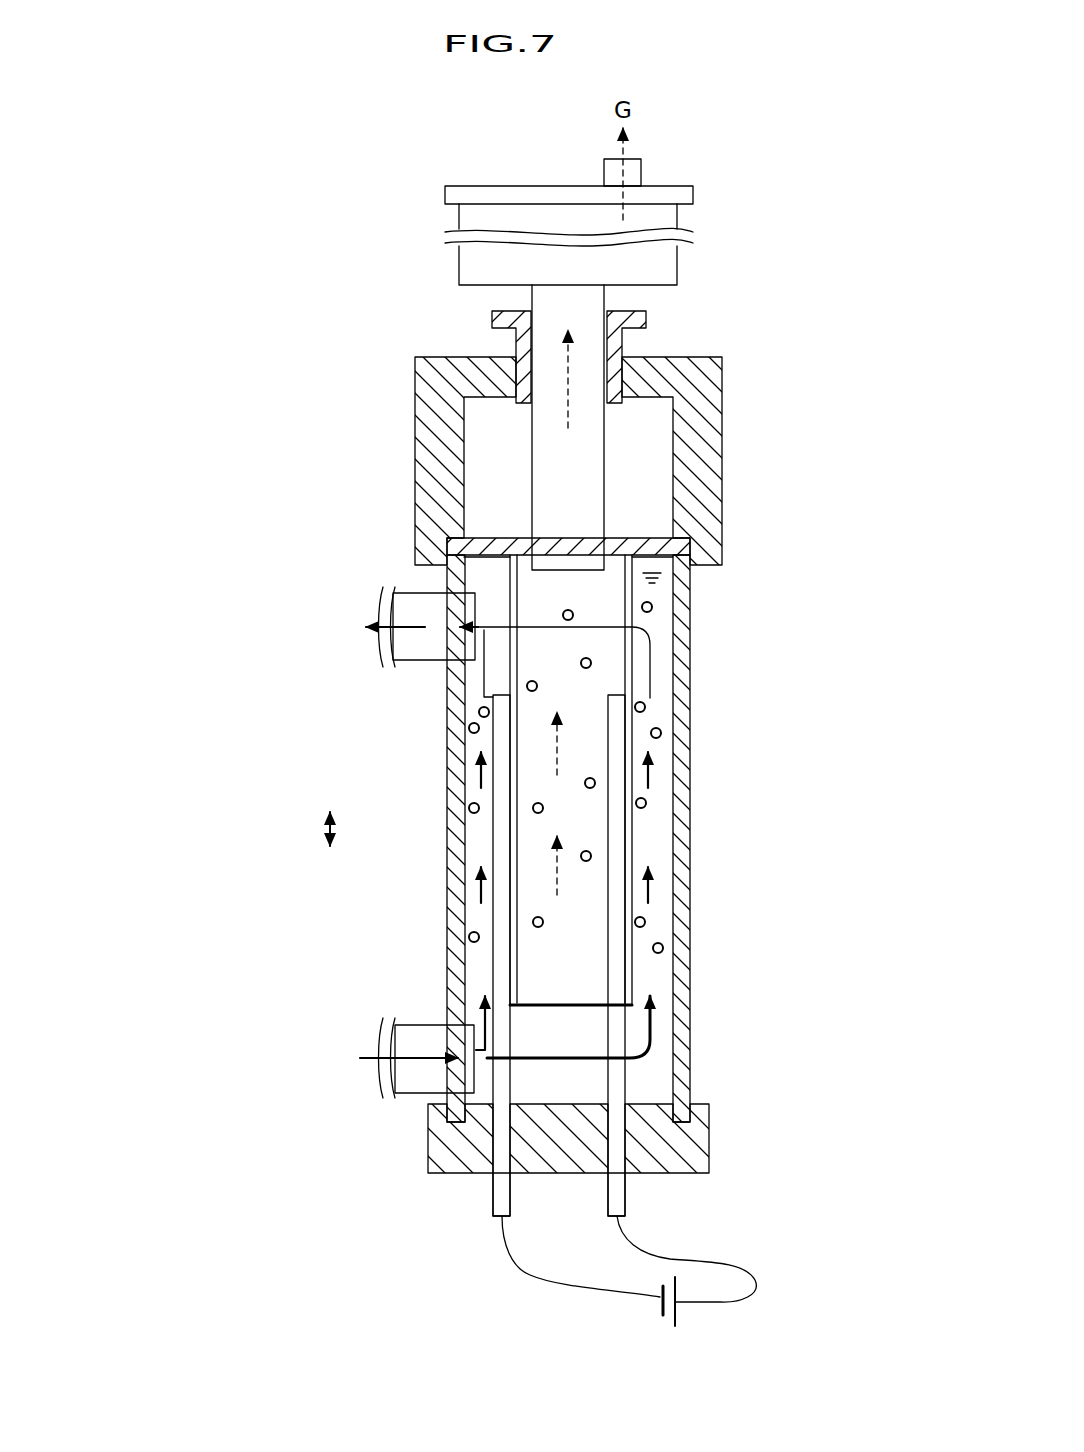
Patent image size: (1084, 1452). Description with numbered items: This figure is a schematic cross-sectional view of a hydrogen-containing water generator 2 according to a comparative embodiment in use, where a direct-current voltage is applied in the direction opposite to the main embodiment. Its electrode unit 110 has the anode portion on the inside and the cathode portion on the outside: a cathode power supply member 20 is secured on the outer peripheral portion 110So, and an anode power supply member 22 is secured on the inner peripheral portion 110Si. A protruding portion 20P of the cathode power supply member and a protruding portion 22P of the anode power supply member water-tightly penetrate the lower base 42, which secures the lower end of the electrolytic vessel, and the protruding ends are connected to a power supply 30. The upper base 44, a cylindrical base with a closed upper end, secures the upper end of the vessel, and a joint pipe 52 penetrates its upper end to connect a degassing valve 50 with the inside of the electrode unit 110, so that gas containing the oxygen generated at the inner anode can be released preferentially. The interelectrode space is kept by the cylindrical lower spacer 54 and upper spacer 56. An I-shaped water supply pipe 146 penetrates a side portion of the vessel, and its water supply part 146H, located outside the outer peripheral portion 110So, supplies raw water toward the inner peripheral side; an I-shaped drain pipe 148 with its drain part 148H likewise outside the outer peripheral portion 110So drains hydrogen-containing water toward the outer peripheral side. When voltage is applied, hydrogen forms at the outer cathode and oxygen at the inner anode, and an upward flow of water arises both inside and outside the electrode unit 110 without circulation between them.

The hydrogen-containing water generator 2 is at (275, 608).
The cathode power supply member 20 is at (500, 850).
The anode power supply member 22 is at (620, 945).
The protruding portion 20P is at (626, 1195).
The protruding portion 22P is at (493, 1198).
The power supply 30 is at (680, 1336).
The lower base 42 is at (693, 1153).
The upper base 44 is at (705, 368).
The degassing valve 50 is at (665, 216).
The joint pipe 52 is at (612, 333).
The lower spacer 54 is at (630, 975).
The upper spacer 56 is at (645, 542).
The electrode unit 110 is at (539, 869).
The inner peripheral portion 110Si is at (625, 600).
The outer peripheral portion 110So is at (633, 680).
The water supply pipe 146 is at (418, 1020).
The water supply part 146H is at (475, 1073).
The drain pipe 148 is at (404, 588).
The drain part 148H is at (476, 632).